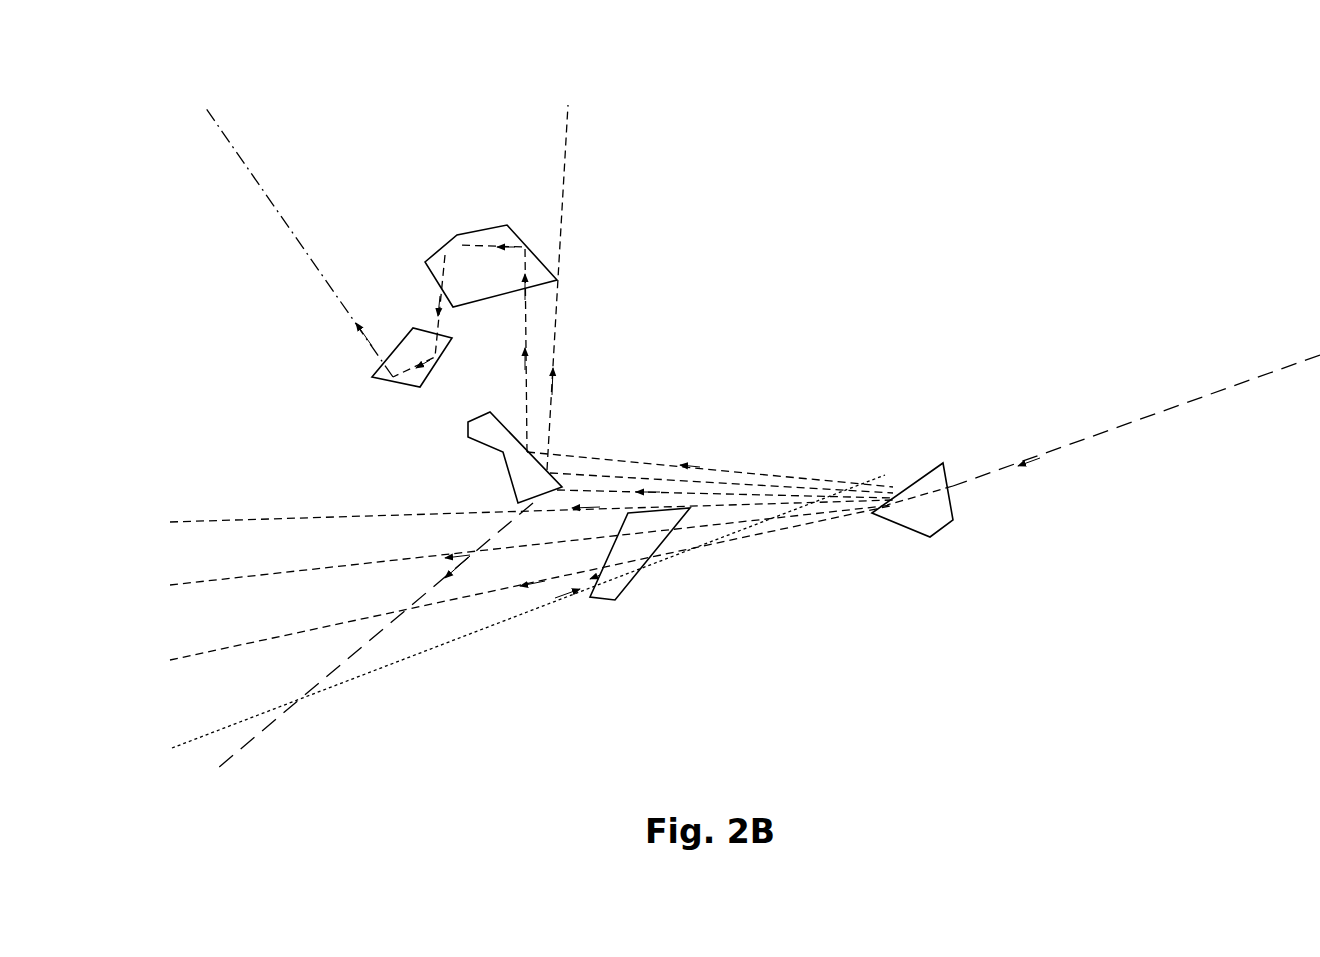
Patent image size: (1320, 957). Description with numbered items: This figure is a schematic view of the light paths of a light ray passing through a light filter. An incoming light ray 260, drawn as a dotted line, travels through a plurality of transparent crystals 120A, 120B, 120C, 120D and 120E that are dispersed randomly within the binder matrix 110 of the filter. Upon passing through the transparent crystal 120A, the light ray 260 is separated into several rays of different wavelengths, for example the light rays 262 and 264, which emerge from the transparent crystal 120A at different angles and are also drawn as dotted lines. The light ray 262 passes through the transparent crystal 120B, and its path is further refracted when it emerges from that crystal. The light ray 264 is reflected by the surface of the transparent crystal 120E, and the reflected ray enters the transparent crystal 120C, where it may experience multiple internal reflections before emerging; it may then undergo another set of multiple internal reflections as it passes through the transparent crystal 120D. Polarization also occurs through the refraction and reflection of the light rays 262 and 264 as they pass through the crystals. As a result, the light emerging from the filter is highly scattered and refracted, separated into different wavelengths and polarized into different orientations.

The binder matrix 110 is at (931, 182).
The transparent crystal 120A is at (925, 522).
The transparent crystal 120B is at (612, 598).
The transparent crystal 120C is at (492, 232).
The transparent crystal 120D is at (413, 336).
The transparent crystal 120E is at (483, 436).
The light ray 260 is at (1185, 397).
The light ray 262 is at (799, 532).
The light ray 264 is at (753, 466).